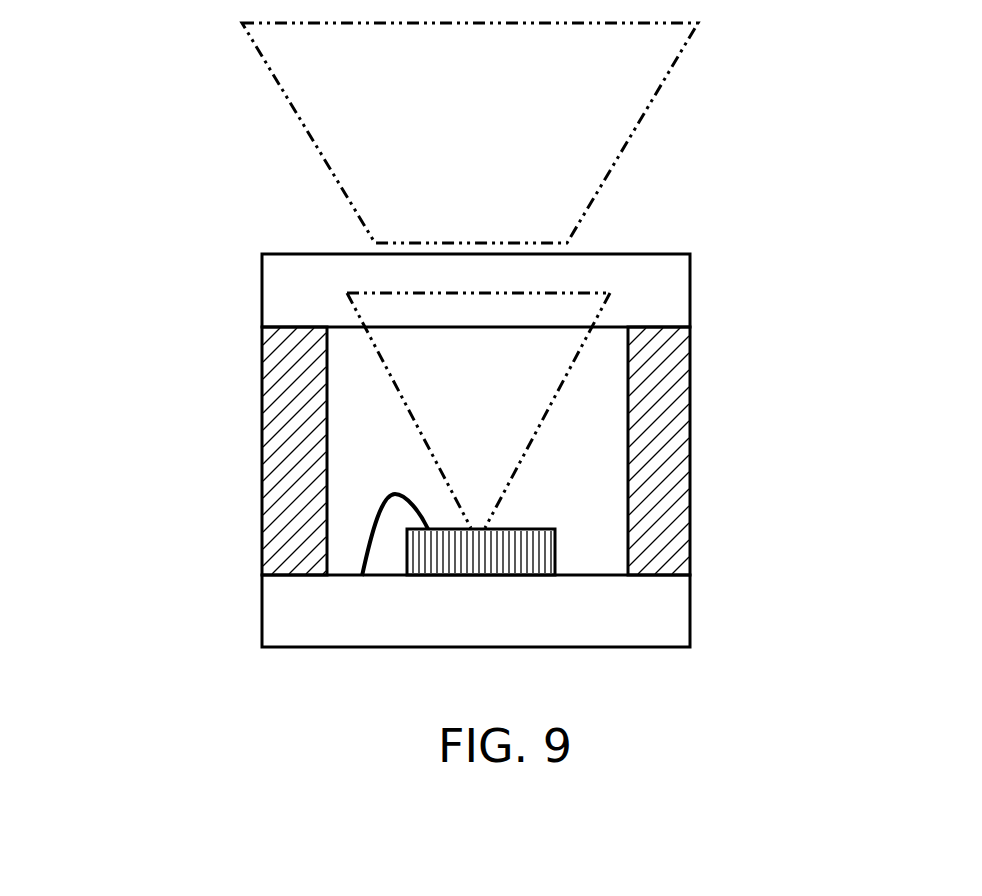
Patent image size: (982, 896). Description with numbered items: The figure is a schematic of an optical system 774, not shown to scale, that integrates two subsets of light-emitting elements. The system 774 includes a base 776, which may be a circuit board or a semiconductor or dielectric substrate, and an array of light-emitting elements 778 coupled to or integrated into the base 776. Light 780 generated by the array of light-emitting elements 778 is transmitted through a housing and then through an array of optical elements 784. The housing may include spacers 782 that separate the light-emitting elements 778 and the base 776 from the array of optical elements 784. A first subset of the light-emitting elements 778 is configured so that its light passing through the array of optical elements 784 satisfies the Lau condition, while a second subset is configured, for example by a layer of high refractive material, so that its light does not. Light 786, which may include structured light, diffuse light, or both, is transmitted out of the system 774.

The system 774 is at (117, 245).
The base 776 is at (690, 605).
The array of light-emitting elements 778 is at (403, 555).
The light 780 is at (548, 422).
The spacers 782 is at (262, 387).
The array of optical elements 784 is at (690, 282).
The light 786 is at (292, 110).